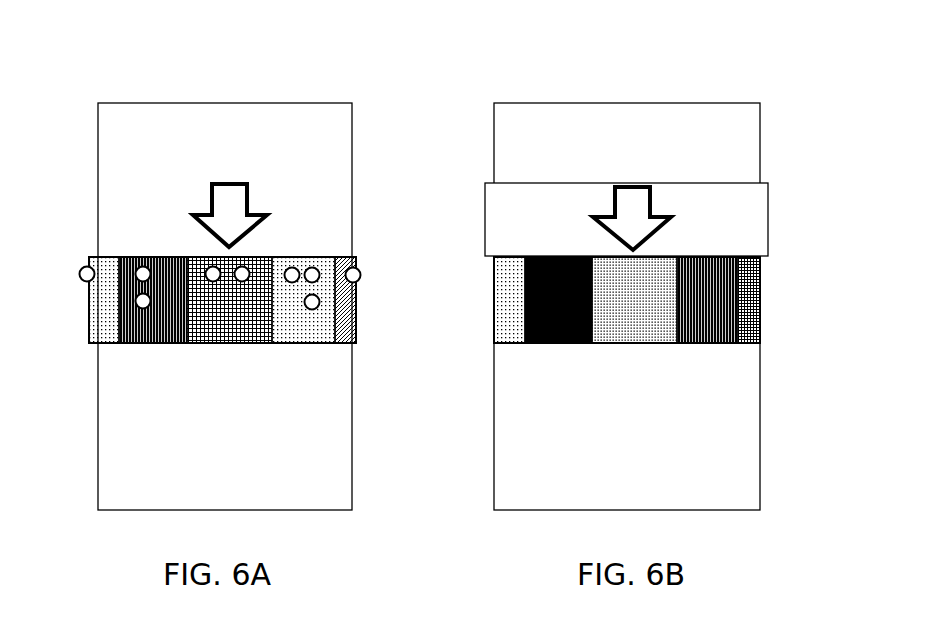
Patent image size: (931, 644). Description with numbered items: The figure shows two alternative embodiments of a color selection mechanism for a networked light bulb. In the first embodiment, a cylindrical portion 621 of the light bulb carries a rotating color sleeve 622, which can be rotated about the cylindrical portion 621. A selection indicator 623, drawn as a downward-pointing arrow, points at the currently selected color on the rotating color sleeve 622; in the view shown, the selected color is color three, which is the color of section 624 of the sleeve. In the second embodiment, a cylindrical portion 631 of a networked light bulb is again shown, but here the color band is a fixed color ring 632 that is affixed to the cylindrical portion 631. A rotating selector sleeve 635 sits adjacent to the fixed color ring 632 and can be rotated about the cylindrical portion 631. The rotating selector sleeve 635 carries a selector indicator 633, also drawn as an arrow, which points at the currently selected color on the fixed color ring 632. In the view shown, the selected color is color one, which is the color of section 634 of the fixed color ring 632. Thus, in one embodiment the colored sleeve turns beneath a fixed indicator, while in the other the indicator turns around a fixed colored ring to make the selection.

In FIG. 6A, the cylindrical portion 621 is at (113, 398).
In FIG. 6A, the rotating color sleeve 622 is at (260, 292).
In FIG. 6A, the selection indicator 623 is at (230, 183).
In FIG. 6A, the section 624 is at (252, 335).
In FIG. 6B, the cylindrical portion 631 is at (517, 395).
In FIG. 6B, the fixed color ring 632 is at (663, 410).
In FIG. 6B, the selector indicator 633 is at (655, 199).
In FIG. 6B, the section 634 is at (647, 333).
In FIG. 6B, the rotating selector sleeve 635 is at (535, 197).